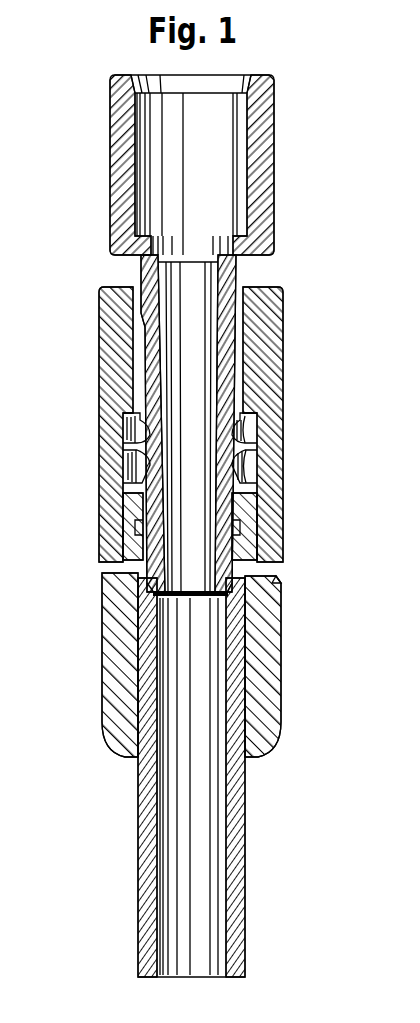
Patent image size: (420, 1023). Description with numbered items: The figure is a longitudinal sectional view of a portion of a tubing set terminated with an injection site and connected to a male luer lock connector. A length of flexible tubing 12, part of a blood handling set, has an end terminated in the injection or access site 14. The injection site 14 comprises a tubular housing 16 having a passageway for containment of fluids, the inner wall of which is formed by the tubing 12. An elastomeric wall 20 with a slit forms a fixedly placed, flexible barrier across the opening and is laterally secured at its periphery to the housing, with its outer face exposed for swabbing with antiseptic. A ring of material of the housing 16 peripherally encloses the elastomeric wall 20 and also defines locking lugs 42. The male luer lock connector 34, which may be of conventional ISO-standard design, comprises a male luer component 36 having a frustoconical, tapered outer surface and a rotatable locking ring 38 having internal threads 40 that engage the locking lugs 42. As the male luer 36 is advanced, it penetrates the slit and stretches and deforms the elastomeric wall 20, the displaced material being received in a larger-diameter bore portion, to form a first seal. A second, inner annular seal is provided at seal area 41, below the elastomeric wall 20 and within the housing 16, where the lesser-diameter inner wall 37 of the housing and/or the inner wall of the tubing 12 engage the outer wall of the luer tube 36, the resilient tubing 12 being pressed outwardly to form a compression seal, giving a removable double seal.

The flexible tubing 12 is at (247, 792).
The injection site 14 is at (260, 673).
The tubular housing 16 is at (110, 688).
The elastomeric wall 20 is at (284, 522).
The male luer lock connector 34 is at (291, 104).
The male luer component 36 is at (225, 461).
The inner wall of housing 37 is at (140, 578).
The rotatable locking ring 38 is at (283, 300).
The internal threads 40 is at (284, 423).
The annular seal area 41 is at (282, 582).
The locking lugs 42 is at (110, 503).